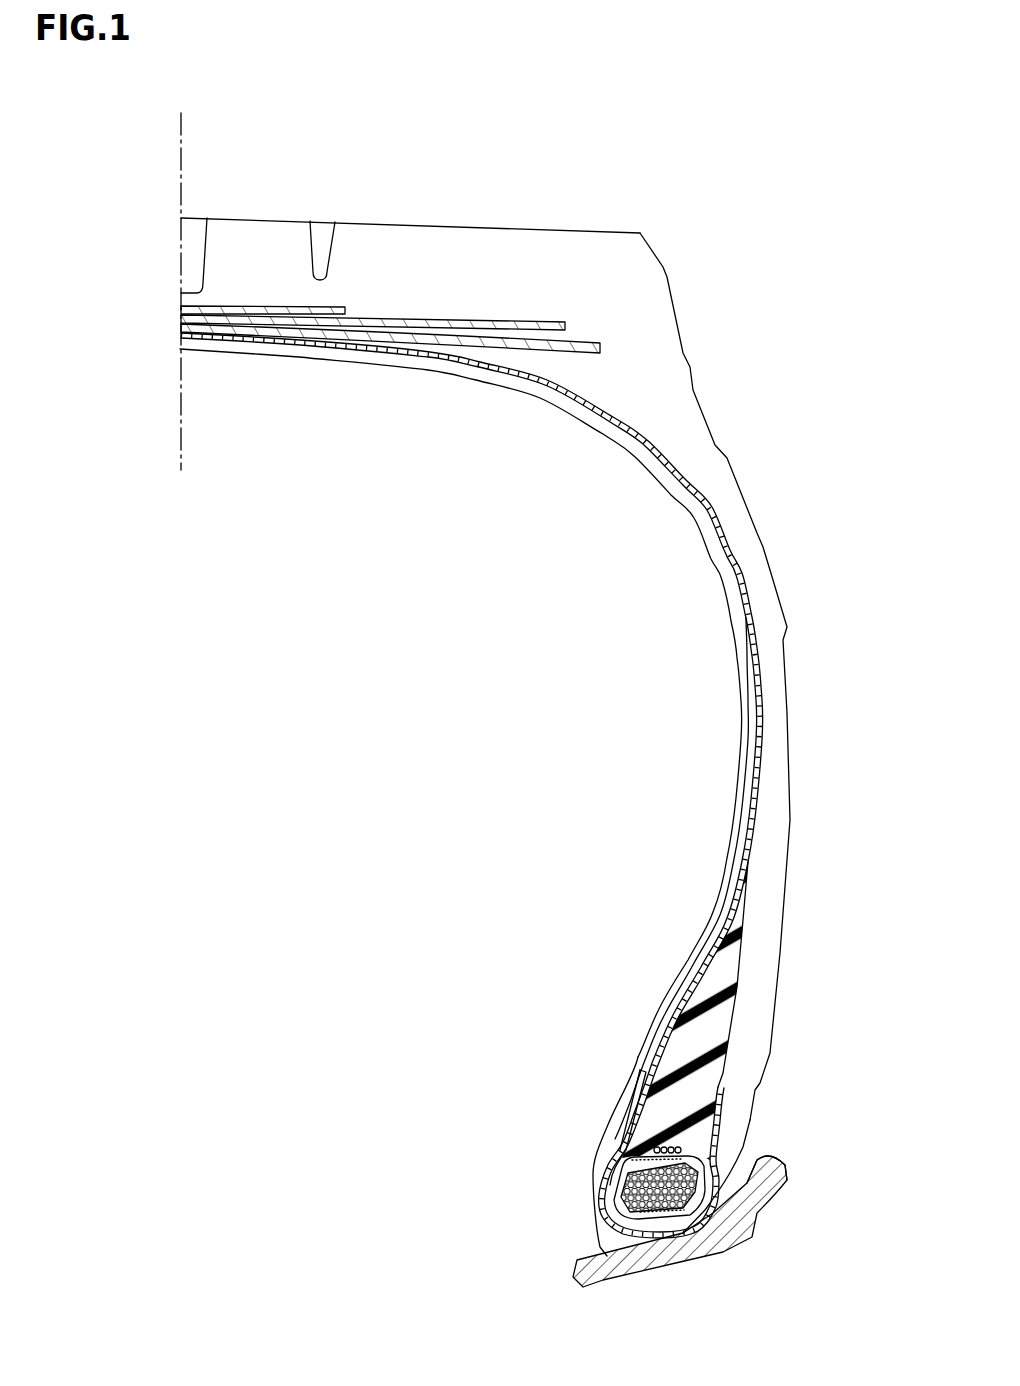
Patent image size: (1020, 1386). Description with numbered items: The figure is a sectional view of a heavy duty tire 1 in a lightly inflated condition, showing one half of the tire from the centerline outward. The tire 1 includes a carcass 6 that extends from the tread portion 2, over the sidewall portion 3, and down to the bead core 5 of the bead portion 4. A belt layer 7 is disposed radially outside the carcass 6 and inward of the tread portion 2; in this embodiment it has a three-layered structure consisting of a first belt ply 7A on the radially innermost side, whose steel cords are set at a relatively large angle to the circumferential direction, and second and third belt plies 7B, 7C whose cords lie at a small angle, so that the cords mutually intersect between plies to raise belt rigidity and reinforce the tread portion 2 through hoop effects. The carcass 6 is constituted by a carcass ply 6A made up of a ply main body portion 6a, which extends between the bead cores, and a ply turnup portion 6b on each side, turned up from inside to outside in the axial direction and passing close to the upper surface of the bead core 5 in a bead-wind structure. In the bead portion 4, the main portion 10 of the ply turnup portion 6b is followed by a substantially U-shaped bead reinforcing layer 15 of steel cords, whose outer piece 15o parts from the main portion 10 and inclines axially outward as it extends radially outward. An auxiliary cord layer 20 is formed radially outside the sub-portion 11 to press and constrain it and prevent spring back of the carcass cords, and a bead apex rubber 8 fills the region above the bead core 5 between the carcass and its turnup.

The heavy duty tire 1 is at (718, 312).
The tread portion 2 is at (452, 253).
The sidewall portion 3 is at (813, 583).
The bead portion 4 is at (554, 1183).
The bead core 5 is at (663, 1218).
The carcass 6 is at (760, 680).
The carcass ply 6A is at (472, 785).
The ply main body portion 6a is at (762, 741).
The ply turnup portion 6b is at (659, 1187).
The belt layer 7 is at (98, 270).
The first belt ply 7A is at (182, 328).
The second belt ply 7B is at (182, 317).
The third belt ply 7C is at (182, 307).
The bead apex rubber 8 is at (673, 1055).
The main portion of the ply turnup portion 10 is at (660, 1222).
The sub-portion 11 is at (636, 1172).
The bead reinforcing layer 15 is at (720, 1127).
The outer piece 15o is at (767, 1169).
The auxiliary cord layer 20 is at (655, 1150).